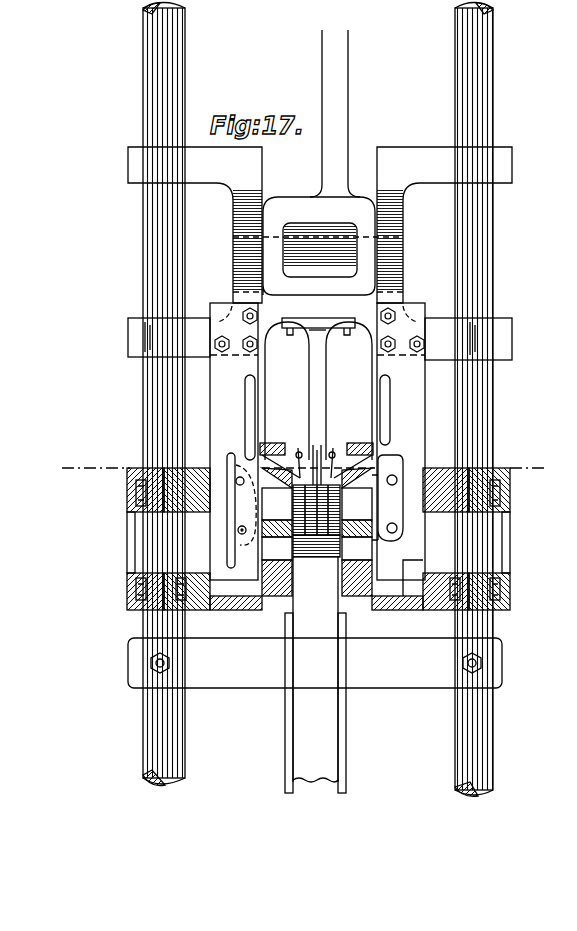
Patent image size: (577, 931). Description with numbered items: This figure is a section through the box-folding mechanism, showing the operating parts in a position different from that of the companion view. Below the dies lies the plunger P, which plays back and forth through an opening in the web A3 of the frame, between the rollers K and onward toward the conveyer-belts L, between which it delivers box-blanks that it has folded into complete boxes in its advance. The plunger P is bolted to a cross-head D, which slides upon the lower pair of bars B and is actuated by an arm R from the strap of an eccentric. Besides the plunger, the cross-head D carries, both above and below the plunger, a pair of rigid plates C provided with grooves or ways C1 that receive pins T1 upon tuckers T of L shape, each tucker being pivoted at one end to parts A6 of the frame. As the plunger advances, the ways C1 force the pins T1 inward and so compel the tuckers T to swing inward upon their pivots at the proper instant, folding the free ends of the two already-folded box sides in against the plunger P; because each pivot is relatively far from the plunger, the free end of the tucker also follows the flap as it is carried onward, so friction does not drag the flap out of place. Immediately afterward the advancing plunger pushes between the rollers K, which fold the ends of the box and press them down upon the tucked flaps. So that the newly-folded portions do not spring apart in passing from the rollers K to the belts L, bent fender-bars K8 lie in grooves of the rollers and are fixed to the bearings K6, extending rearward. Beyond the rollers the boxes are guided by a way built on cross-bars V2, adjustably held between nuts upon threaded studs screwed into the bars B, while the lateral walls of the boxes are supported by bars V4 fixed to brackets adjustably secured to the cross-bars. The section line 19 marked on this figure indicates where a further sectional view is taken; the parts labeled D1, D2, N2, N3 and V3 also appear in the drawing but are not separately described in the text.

The bars B is at (163, 255).
The arm R is at (335, 113).
The cross-head D is at (405, 218).
The crosshead recess D1 is at (330, 268).
The bracket D2 is at (505, 330).
The rigid plates C is at (317, 441).
The grooves or ways C1 is at (248, 405).
The yoke arm N2 is at (335, 462).
The pin N3 is at (305, 458).
The plunger P is at (317, 462).
The web A3 is at (170, 468).
The section line 19 19 is at (303, 466).
The tuckers T is at (390, 498).
The pins T1 is at (236, 472).
The parts of the frame A6 is at (397, 535).
The bearings K6 is at (316, 490).
The fender-bars K8 is at (317, 566).
The rollers K is at (322, 540).
The conveyer-belts L is at (315, 669).
The bars V4 is at (285, 740).
The cross-bars V2 is at (315, 663).
The nut V3 is at (150, 663).